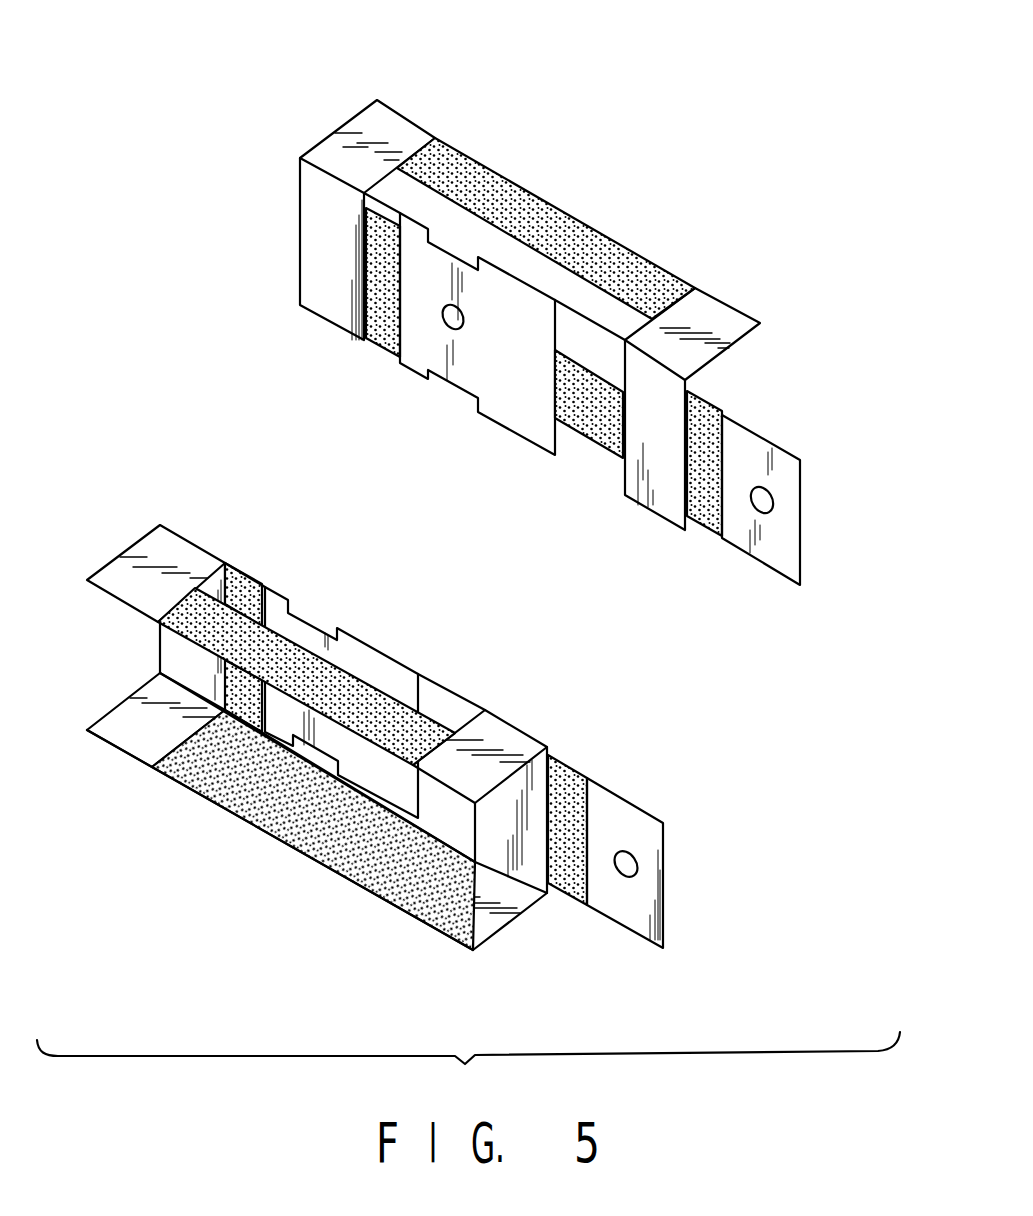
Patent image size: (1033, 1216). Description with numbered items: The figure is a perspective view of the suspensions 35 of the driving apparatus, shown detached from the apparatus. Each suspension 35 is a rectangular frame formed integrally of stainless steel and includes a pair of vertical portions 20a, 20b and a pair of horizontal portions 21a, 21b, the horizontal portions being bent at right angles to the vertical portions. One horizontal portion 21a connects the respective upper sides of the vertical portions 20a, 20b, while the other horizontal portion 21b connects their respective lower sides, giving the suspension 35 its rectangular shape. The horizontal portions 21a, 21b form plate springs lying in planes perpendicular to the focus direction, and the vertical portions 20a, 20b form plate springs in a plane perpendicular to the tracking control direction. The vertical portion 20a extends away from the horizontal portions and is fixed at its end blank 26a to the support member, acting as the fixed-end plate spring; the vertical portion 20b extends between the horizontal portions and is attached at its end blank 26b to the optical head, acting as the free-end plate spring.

The suspension 35 is at (353, 93).
The vertical portion 20a is at (708, 530).
The vertical portion 20b is at (378, 342).
The horizontal portion 21a is at (540, 198).
The horizontal portion 21b is at (587, 433).
The end blank 26a is at (748, 448).
The end blank 26b is at (502, 415).